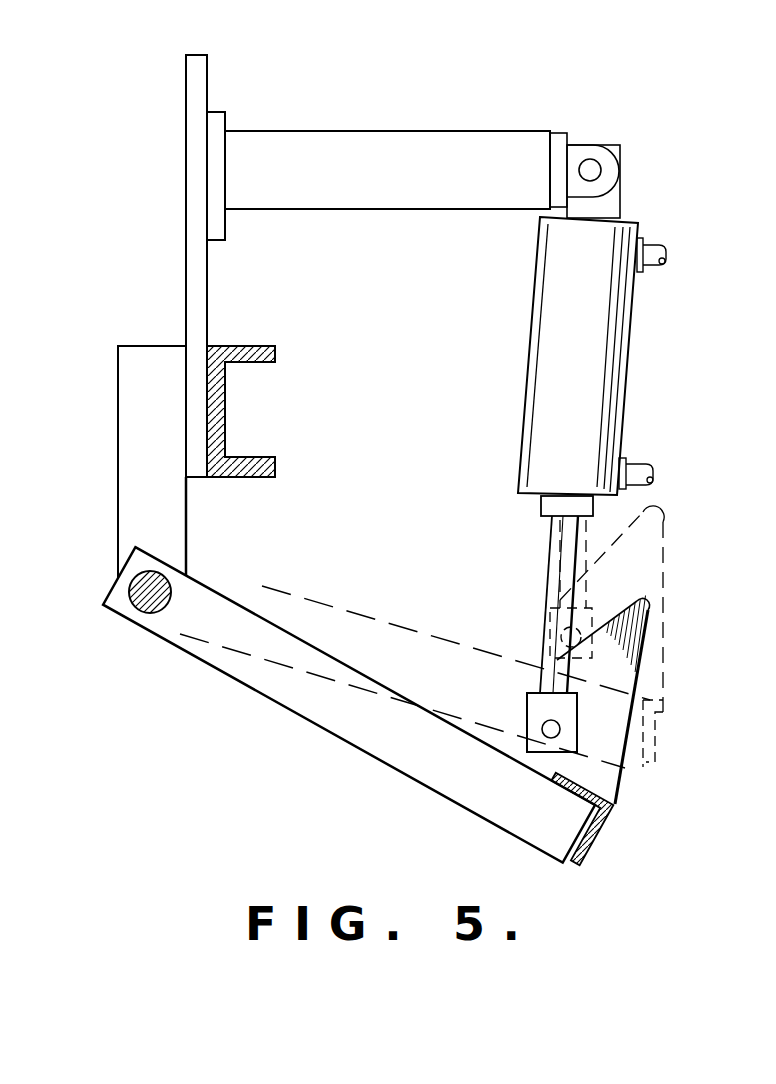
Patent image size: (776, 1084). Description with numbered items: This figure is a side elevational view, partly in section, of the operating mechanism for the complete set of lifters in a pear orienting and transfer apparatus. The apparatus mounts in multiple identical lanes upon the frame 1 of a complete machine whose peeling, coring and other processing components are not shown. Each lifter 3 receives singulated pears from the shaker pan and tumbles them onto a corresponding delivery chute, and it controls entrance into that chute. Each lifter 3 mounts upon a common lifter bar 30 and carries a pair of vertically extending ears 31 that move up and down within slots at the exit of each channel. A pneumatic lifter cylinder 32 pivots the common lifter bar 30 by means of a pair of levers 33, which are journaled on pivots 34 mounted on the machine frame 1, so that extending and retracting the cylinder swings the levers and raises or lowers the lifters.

The frame 1 is at (186, 291).
The lifter 3 is at (622, 795).
The common lifter bar 30 is at (596, 838).
The vertically extending ears 31 is at (643, 641).
The pneumatic lifter cylinder 32 is at (618, 356).
The lever 33 is at (327, 730).
The pivot 34 is at (139, 609).